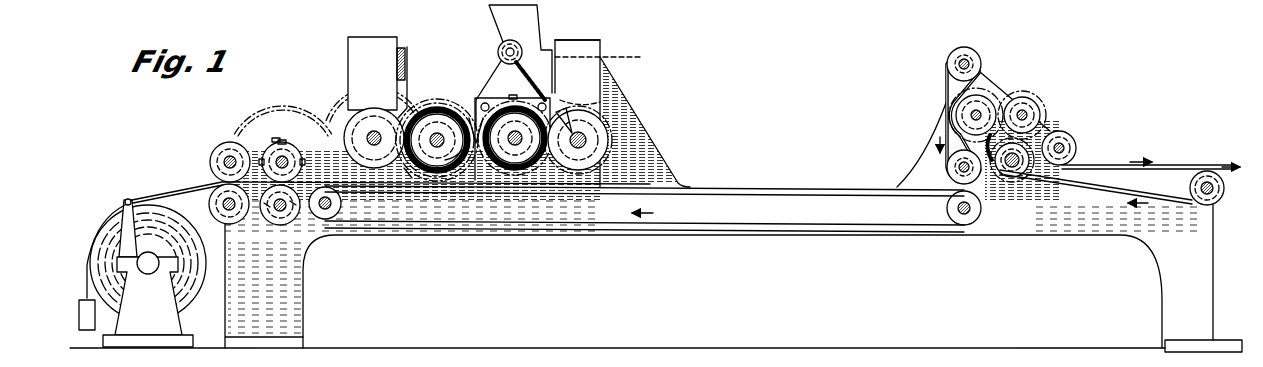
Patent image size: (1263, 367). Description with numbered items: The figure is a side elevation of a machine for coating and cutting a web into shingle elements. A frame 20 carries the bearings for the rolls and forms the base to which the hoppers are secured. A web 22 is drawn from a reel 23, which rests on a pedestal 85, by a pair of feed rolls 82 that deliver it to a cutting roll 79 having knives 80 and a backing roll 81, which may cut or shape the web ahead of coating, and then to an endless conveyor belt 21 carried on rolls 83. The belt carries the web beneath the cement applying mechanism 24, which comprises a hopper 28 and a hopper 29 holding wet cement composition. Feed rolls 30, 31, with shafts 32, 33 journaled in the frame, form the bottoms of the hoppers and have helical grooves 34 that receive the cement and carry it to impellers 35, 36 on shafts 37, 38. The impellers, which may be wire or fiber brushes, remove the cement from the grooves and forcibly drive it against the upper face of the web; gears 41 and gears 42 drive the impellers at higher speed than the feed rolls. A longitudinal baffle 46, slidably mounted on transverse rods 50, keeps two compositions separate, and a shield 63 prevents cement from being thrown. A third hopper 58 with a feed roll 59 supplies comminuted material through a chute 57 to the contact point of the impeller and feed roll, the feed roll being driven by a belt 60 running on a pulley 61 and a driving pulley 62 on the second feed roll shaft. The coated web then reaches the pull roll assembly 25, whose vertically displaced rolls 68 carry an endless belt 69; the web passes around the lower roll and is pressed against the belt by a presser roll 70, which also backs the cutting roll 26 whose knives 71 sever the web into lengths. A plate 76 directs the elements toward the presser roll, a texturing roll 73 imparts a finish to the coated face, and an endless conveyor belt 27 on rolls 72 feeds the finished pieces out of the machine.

The frame 20 is at (935, 235).
The endless conveyor belt 21 is at (602, 192).
The web 22 is at (192, 190).
The reel 23 is at (108, 232).
The cement applying mechanism 24 is at (418, 68).
The pull roll assembly 25 is at (1006, 56).
The cutting roll 26 is at (1028, 103).
The endless conveyor belt 27 is at (1103, 193).
The hopper 28 is at (377, 77).
The hopper 29 is at (600, 50).
The feed roll 30 is at (378, 168).
The feed roll 31 is at (597, 133).
The shaft 32 is at (376, 136).
The shaft 33 is at (584, 147).
The helical grooves 34 is at (402, 176).
The impeller 35 is at (449, 156).
The impeller 36 is at (517, 146).
The shaft 37 is at (437, 148).
The shaft 38 is at (515, 158).
The gears 41 is at (338, 93).
The gears 42 is at (608, 102).
The longitudinal baffle 46 is at (487, 178).
The transverse rods 50 is at (475, 98).
The chute 57 is at (522, 68).
The third hopper 58 is at (520, 49).
The feed roll 59 is at (528, 43).
The belt 60 is at (585, 46).
The pulley 61 is at (560, 48).
The driving pulley 62 is at (600, 101).
The shield 63 is at (433, 104).
The rolls 68 is at (955, 52).
The endless belt 69 is at (944, 78).
The presser roll 70 is at (978, 113).
The knives 71 is at (1016, 99).
The rolls 72 is at (1013, 176).
The texturing roll 73 is at (1062, 137).
The plate 76 is at (1007, 180).
The cutting roll 79 is at (288, 140).
The knives 80 is at (276, 142).
The backing roll 81 is at (283, 223).
The feed rolls 82 is at (223, 143).
The rolls 83 is at (330, 215).
The pedestal 85 is at (136, 273).